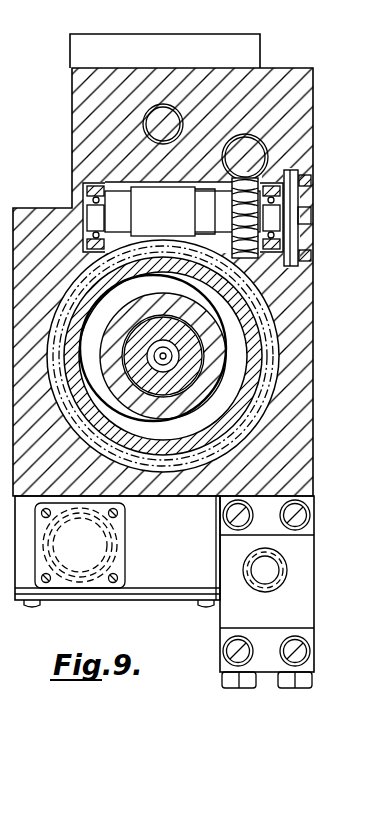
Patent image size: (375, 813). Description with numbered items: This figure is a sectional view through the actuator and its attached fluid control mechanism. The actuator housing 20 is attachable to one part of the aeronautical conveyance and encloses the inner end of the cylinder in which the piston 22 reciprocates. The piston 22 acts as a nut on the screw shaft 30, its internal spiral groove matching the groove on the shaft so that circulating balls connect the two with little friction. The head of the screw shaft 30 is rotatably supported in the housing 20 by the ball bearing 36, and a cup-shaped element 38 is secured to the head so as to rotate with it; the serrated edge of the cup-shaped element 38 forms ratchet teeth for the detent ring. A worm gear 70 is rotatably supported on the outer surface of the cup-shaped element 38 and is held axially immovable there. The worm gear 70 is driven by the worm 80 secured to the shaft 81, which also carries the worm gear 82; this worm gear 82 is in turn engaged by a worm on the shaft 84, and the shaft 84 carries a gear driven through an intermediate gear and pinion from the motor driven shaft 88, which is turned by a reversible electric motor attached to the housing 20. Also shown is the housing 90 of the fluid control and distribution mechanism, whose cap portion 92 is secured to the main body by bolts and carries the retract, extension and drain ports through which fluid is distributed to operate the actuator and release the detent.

The housing 20 is at (292, 380).
The piston 22 is at (173, 300).
The screw shaft 30 is at (148, 377).
The ball bearing 36 is at (110, 545).
The cup-shaped element 38 is at (250, 347).
The worm gear 70 is at (259, 320).
The worm 80 is at (177, 190).
The shaft 81 is at (100, 217).
The worm gear 82 is at (242, 222).
The shaft 84 is at (246, 157).
The motor driven shaft 88 is at (160, 115).
The housing 90 is at (303, 548).
The cap portion 92 is at (369, 634).